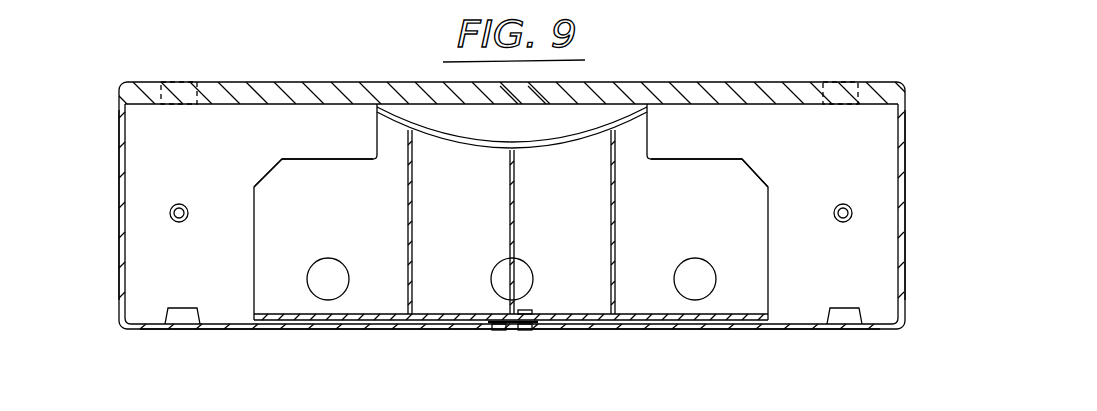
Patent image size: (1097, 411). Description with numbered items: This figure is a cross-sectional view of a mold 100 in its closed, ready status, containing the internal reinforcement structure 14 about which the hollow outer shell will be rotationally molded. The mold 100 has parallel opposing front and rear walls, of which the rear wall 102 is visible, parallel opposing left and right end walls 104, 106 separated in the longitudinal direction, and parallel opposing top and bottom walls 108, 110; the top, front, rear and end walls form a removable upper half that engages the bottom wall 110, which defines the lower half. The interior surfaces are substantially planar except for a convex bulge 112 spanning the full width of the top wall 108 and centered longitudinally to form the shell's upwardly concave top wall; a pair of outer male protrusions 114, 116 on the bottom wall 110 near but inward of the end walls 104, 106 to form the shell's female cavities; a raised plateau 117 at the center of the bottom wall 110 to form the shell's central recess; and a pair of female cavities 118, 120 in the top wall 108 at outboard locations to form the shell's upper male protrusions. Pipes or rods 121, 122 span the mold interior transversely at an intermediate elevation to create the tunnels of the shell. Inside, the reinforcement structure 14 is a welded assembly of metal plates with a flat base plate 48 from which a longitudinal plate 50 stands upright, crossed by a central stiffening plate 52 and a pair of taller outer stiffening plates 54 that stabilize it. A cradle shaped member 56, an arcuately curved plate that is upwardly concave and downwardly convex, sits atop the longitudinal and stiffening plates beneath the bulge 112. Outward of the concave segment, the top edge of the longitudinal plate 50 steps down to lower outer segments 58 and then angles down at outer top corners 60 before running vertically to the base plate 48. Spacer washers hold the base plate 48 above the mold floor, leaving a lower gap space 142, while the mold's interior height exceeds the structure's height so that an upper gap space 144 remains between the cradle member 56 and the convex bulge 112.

The mold 100 is at (889, 60).
The rear wall 102 is at (882, 252).
The left end wall 104 is at (122, 238).
The right end wall 106 is at (903, 185).
The top wall 108 is at (728, 94).
The bottom wall 110 is at (220, 329).
The convex bulge 112 is at (473, 127).
The outer male protrusion 114 is at (177, 313).
The outer male protrusion 116 is at (842, 308).
The raised plateau 117 is at (492, 326).
The female cavity 118 is at (186, 100).
The female cavity 120 is at (847, 106).
The pipe or rod 121 is at (177, 224).
The pipe or rod 122 is at (840, 224).
The lower gap space 142 is at (352, 323).
The upper gap space 144 is at (522, 142).
The internal reinforcement structure 14 is at (273, 222).
The base plate 48 is at (700, 317).
The longitudinal plate 50 is at (758, 240).
The central stiffening plate 52 is at (512, 223).
The outer stiffening plate 54 is at (408, 230).
The cradle shaped member 56 is at (563, 146).
The outer segment 58 is at (317, 158).
The outer top corner 60 is at (268, 172).